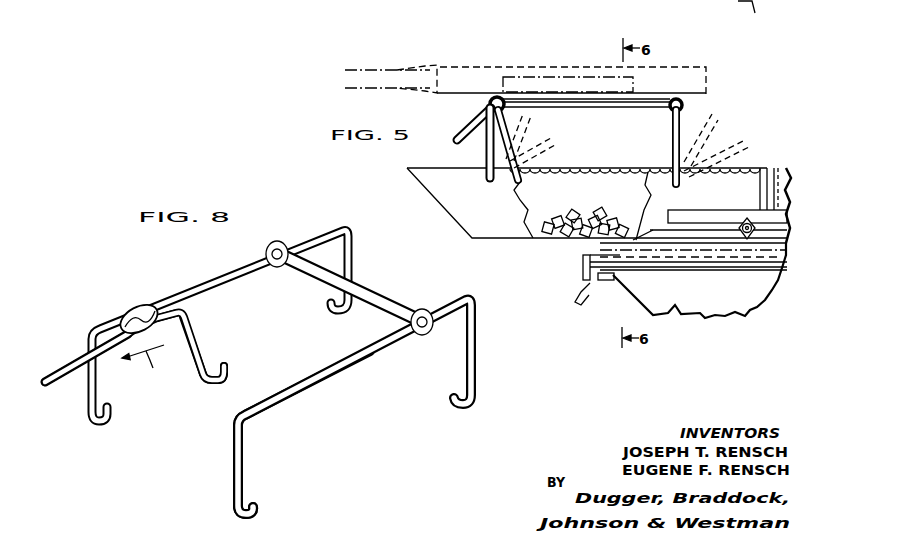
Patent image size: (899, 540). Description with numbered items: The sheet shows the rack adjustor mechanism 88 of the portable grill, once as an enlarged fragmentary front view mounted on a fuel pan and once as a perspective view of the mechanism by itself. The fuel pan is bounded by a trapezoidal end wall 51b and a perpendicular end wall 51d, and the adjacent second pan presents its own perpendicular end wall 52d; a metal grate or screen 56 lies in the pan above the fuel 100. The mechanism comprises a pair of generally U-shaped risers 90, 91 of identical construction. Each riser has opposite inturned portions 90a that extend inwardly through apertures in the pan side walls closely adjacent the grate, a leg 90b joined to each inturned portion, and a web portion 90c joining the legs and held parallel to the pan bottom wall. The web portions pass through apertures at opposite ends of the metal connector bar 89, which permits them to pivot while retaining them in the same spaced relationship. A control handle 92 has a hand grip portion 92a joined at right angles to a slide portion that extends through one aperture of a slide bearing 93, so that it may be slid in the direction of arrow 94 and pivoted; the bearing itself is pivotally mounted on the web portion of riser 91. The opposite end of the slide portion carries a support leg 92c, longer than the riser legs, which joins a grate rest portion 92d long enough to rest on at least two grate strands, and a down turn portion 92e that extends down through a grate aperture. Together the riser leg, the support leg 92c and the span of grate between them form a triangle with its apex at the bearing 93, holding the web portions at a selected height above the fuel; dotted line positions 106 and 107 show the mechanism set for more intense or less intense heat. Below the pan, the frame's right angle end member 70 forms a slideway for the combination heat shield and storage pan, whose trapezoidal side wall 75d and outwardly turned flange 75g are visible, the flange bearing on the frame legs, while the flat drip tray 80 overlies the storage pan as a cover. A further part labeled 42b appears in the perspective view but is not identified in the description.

In FIG. 5, the rack adjustor mechanism 88 is at (478, 105).
In FIG. 8, the rack adjustor mechanism 88 is at (352, 222).
In FIG. 8, the connector bar 89 is at (391, 308).
In FIG. 5, the riser 90 is at (671, 119).
In FIG. 8, the riser 90 is at (378, 348).
In FIG. 8, the inturned portions 90a is at (246, 494).
In FIG. 8, the leg 90b is at (244, 457).
In FIG. 8, the web portion 90c is at (327, 376).
In FIG. 8, the riser 91 is at (230, 276).
In FIG. 5, the control handle 92 is at (463, 136).
In FIG. 8, the hand grip portion 92a is at (59, 366).
In FIG. 8, the support leg 92c is at (197, 345).
In FIG. 8, the grate rest portion 92d is at (221, 364).
In FIG. 8, the down turn portion 92e is at (232, 374).
In FIG. 8, the slide bearing 93 is at (130, 309).
In FIG. 8, the arrow 94 is at (148, 363).
In FIG. 8, the frame member 42b is at (167, 310).
In FIG. 5, the metal grate 56 is at (583, 169).
In FIG. 5, the fuel 100 is at (596, 214).
In FIG. 5, the trapezoidal end wall 51b is at (503, 201).
In FIG. 5, the perpendicular end wall 51d is at (758, 173).
In FIG. 5, the perpendicular end wall 52d is at (780, 195).
In FIG. 5, the right angle end member 70 is at (583, 267).
In FIG. 5, the flange 75g is at (601, 297).
In FIG. 5, the side wall 75d is at (692, 306).
In FIG. 5, the drip tray 80 is at (713, 257).
In FIG. 5, the dotted line position 106 is at (741, 141).
In FIG. 5, the dotted line position 107 is at (714, 113).